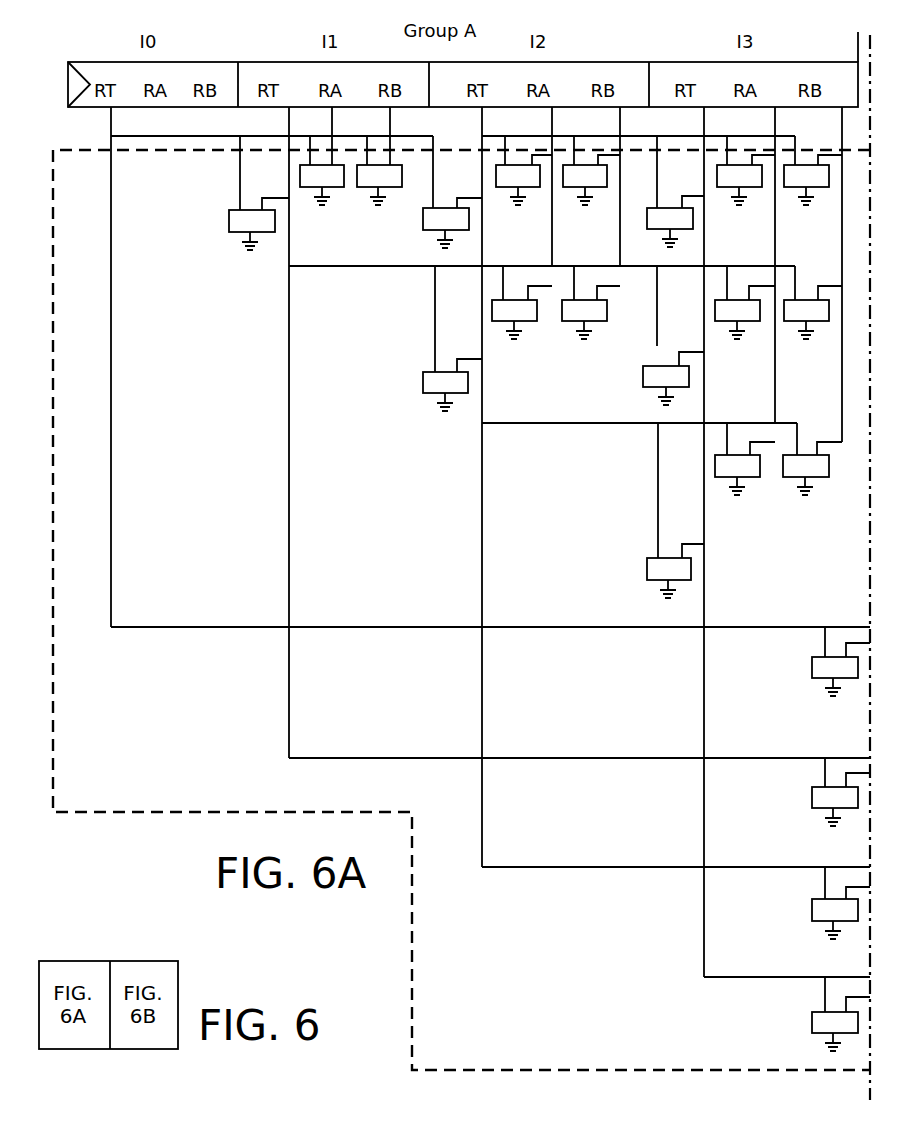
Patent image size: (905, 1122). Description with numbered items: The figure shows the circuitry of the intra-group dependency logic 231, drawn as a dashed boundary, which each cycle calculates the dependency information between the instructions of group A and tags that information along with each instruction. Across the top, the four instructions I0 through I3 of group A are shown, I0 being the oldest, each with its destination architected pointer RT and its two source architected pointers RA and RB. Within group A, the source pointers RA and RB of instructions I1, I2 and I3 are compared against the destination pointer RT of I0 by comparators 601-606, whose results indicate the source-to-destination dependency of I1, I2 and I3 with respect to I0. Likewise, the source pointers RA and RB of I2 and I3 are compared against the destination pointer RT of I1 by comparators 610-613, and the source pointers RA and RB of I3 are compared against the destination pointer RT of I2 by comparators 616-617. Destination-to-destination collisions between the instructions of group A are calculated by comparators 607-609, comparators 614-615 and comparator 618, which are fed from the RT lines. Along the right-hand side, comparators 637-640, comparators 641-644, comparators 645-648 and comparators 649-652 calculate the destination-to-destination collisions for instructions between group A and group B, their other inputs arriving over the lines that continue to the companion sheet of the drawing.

The comparators 601-606 is at (333, 190).
The comparators 607-609 is at (228, 225).
The comparators 610-613 is at (530, 323).
The comparators 614-615 is at (423, 383).
The comparators 616-617 is at (757, 477).
The comparator 618 is at (645, 571).
The comparators 637-640 is at (812, 673).
The comparators 641-644 is at (812, 800).
The comparators 645-648 is at (812, 910).
The comparators 649-652 is at (812, 1013).
The intra-group dependency logic 231 is at (140, 813).